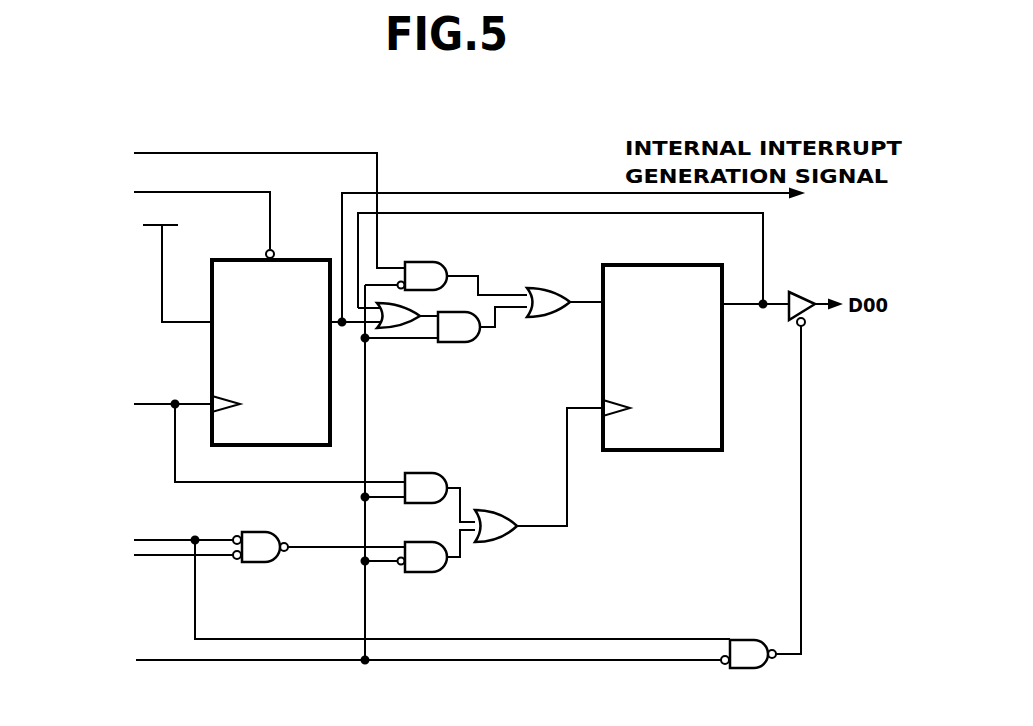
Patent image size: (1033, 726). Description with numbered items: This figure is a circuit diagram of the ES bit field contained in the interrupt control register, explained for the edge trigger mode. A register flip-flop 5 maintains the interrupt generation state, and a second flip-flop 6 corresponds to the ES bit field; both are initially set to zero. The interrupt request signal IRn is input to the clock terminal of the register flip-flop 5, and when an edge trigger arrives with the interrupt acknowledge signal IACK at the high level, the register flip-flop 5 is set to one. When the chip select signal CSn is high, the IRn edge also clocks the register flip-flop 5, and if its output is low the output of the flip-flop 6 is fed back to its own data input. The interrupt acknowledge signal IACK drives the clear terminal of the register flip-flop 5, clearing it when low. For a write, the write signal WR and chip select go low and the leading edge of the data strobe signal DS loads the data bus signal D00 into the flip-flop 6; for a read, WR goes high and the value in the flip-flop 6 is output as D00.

The register F/F 5 is at (299, 258).
The flip-flop F/F 6 is at (616, 264).
The data bus signal D00 is at (238, 205).
The interrupt acknowledge signal IACK is at (165, 215).
The interrupt request signal IRn is at (242, 438).
The write signal WR is at (406, 584).
The data strobe signal DS is at (157, 559).
The chip select signal CSn is at (402, 659).